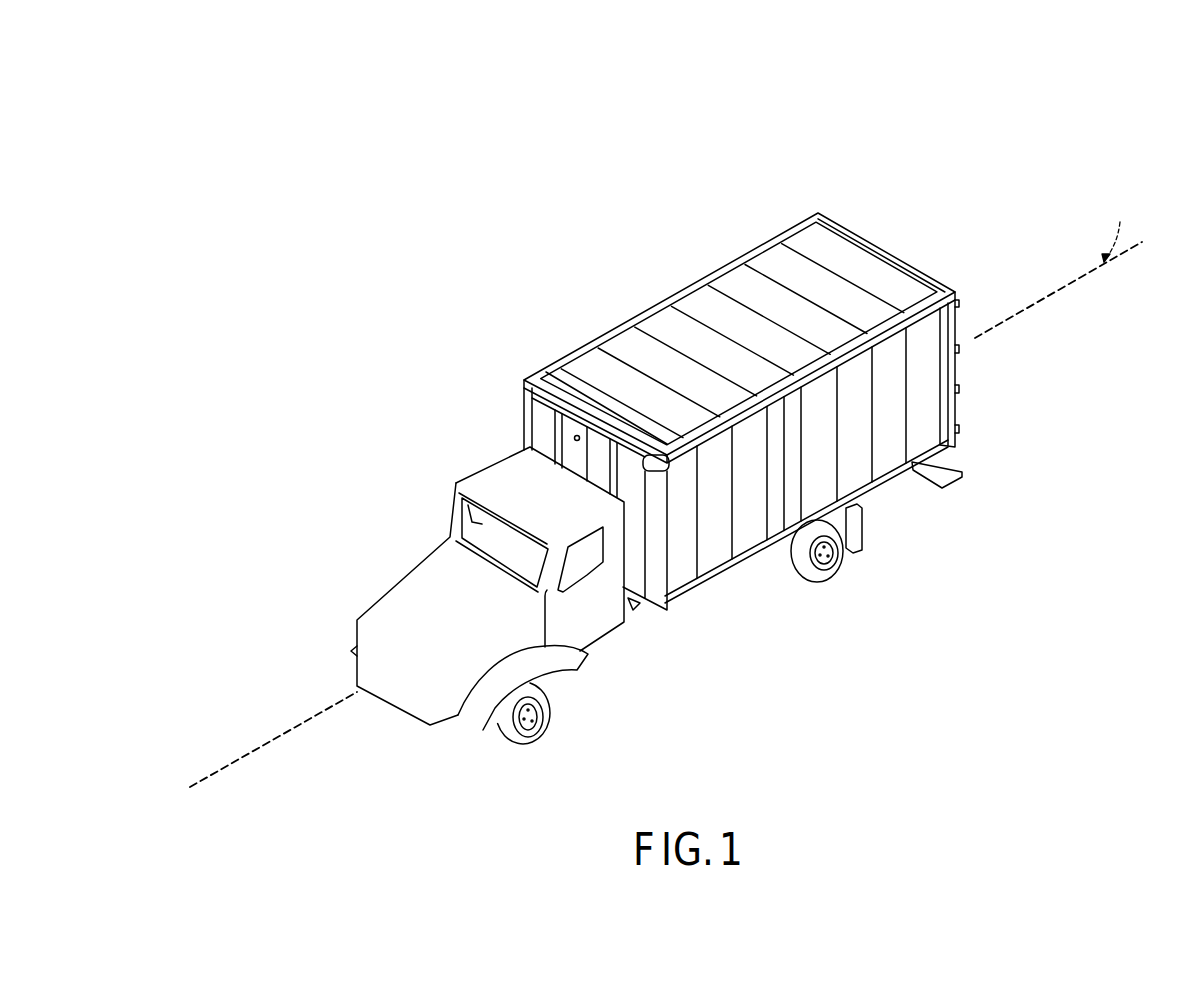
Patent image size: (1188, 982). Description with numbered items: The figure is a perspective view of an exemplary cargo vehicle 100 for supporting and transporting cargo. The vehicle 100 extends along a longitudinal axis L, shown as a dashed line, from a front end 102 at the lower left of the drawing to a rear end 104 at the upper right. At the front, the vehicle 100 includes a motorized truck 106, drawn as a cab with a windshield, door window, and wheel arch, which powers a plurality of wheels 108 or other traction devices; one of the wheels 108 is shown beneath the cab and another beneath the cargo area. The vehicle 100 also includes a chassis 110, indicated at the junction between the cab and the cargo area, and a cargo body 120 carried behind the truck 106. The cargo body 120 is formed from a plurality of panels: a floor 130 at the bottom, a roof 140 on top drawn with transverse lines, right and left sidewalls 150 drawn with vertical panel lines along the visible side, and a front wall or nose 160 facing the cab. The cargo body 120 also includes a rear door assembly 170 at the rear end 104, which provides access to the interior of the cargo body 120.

The cargo vehicle 100 is at (1000, 130).
The front end 102 is at (245, 695).
The rear end 104 is at (1043, 385).
The motorized truck 106 is at (597, 627).
The wheels 108 is at (515, 737).
The chassis 110 is at (633, 605).
The cargo body 120 is at (605, 240).
The floor 130 is at (888, 480).
The roof 140 is at (740, 277).
The right and left sidewalls 150 is at (722, 557).
The front wall or nose 160 is at (537, 427).
The rear door assembly 170 is at (903, 265).